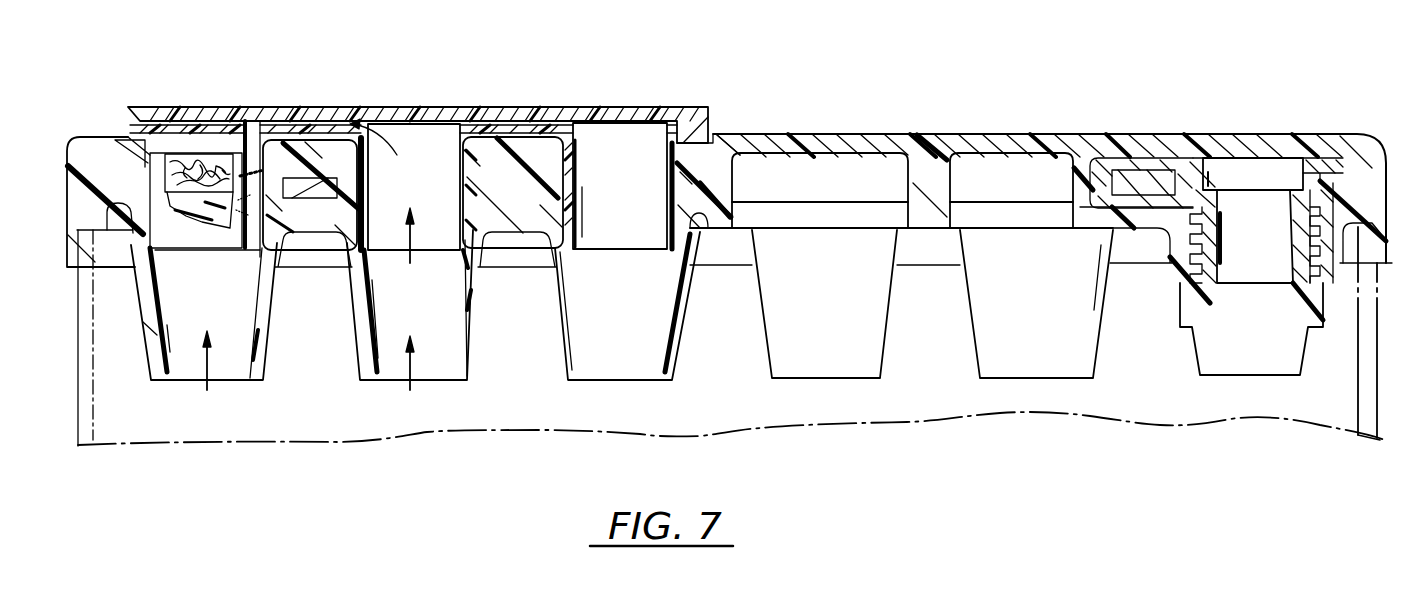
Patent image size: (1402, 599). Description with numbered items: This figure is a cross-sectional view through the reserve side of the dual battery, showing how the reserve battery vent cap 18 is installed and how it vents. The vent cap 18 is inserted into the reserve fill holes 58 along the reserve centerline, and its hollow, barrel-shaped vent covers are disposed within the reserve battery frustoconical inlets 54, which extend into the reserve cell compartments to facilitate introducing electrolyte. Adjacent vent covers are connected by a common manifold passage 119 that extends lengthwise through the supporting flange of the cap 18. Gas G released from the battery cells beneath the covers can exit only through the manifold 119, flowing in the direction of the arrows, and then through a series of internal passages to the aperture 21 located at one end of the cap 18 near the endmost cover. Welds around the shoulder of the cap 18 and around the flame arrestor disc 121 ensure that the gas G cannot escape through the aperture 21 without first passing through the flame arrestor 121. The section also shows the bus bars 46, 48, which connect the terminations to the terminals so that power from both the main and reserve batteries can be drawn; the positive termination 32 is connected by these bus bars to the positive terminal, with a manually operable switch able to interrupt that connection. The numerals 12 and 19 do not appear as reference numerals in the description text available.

The housing body 12 is at (860, 134).
The reserve battery vent cap 18 is at (490, 106).
The solid block 19 is at (450, 238).
The aperture 21 is at (197, 147).
The positive termination 32 is at (1313, 160).
The bus bar 46 is at (1133, 184).
The bus bar 48 is at (324, 192).
The reserve battery frustoconical inlet 54 is at (793, 360).
The reserve fill hole 58 is at (609, 367).
The manifold passage 119 is at (371, 62).
The flame arrestor disc 121 is at (210, 157).
The gas G is at (307, 316).